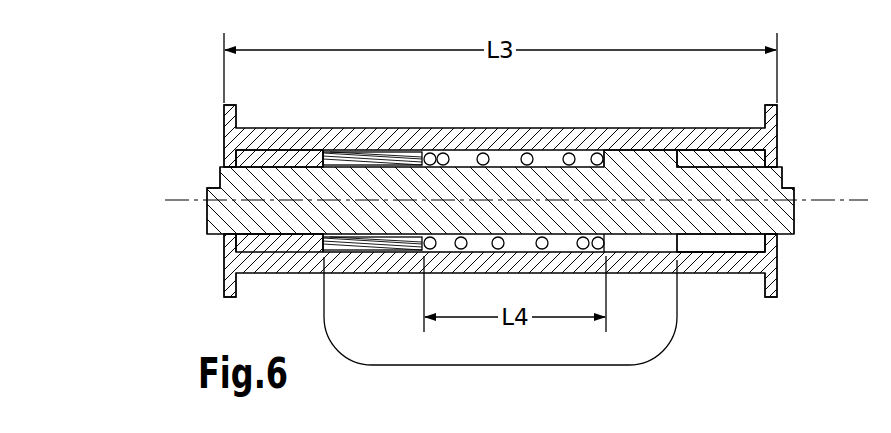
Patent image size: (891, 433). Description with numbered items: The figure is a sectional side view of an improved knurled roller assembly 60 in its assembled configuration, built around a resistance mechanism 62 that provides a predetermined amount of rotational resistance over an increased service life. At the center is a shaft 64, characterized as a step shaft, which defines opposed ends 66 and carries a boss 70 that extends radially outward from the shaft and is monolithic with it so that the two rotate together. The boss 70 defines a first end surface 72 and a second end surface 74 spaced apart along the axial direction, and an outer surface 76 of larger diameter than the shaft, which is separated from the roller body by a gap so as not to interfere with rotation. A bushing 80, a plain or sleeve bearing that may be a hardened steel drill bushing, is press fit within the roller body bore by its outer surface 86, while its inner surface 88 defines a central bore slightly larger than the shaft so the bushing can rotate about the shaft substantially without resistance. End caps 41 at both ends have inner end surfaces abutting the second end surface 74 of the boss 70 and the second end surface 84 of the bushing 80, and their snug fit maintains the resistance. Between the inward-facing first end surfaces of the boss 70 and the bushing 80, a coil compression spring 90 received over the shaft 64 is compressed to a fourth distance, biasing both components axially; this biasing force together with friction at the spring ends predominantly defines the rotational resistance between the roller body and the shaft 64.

The knurled roller assembly 60 is at (160, 136).
The end caps 41 is at (224, 258).
The resistance mechanism 62 is at (540, 365).
The shaft 64 is at (482, 193).
The opposed ends 66 is at (207, 218).
The boss 70 is at (654, 163).
The first end surface 72 is at (601, 157).
The second end surface 74 is at (700, 150).
The outer surface 76 is at (633, 150).
The bushing 80 is at (368, 158).
The second end surface 84 is at (316, 160).
The outer surface 86 is at (350, 157).
The inner surface 88 is at (398, 168).
The coil compression spring 90 is at (525, 153).